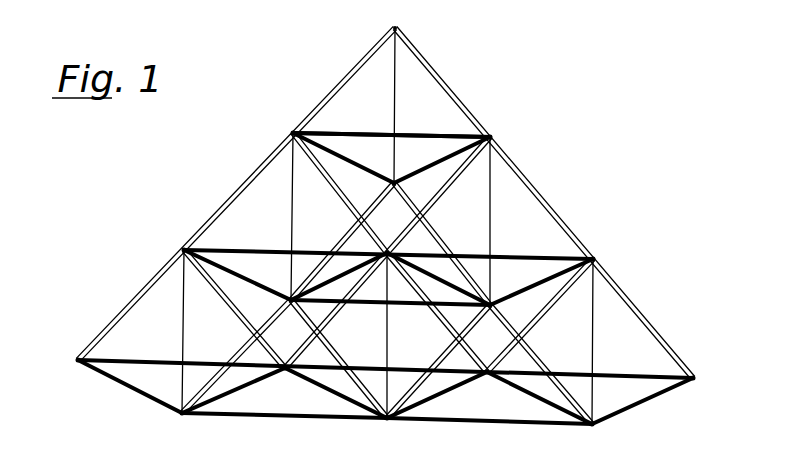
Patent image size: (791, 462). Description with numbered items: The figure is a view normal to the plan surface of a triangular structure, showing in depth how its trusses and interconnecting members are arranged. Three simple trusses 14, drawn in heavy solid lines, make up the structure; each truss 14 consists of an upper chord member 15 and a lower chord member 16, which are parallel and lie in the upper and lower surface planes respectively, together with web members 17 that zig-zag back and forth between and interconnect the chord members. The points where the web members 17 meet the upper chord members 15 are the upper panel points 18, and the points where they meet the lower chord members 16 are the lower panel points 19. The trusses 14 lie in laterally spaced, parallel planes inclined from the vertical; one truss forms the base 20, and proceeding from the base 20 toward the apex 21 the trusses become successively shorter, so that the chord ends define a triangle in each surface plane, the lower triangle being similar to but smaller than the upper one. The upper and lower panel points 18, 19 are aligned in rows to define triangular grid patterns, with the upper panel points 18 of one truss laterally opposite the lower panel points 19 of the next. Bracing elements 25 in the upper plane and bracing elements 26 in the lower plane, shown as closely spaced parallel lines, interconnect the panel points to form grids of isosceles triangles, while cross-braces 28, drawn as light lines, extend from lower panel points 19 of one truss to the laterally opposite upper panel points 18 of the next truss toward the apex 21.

The truss 14 is at (455, 128).
The upper chord member 15 is at (357, 131).
The lower chord member 16 is at (402, 308).
The web member 17 is at (348, 158).
The upper panel point 18 is at (291, 133).
The lower panel point 19 is at (396, 183).
The base 20 is at (289, 424).
The apex 21 is at (398, 28).
The bracing element 25 is at (336, 90).
The bracing element 26 is at (344, 238).
The cross-brace 28 is at (395, 103).